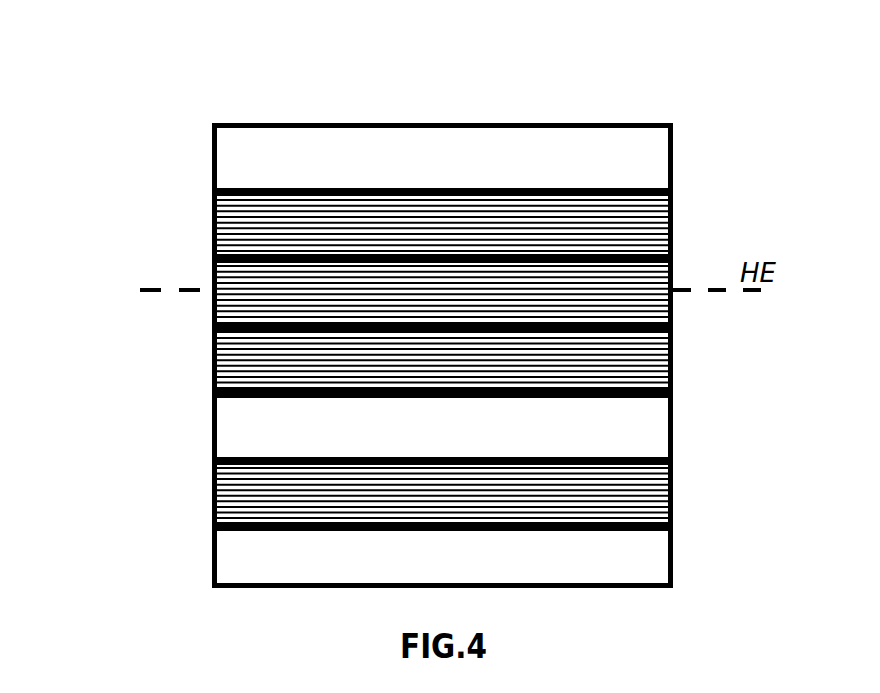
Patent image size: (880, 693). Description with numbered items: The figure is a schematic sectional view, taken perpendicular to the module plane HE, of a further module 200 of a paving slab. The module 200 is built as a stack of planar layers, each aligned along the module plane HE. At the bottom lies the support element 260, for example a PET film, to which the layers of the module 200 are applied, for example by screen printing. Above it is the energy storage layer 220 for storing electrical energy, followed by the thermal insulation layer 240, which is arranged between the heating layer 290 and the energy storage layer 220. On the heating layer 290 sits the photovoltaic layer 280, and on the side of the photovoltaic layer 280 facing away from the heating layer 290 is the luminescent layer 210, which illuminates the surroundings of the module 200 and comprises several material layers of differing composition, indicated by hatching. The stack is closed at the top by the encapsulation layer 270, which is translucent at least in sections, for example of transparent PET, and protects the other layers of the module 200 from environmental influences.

The module 200 is at (173, 81).
The encapsulation layer 270 is at (212, 164).
The luminescent layer 210 is at (212, 228).
The photovoltaic layer 280 is at (212, 282).
The heating layer 290 is at (212, 367).
The thermal insulation layer 240 is at (212, 425).
The energy storage layer 220 is at (212, 487).
The support element 260 is at (212, 548).